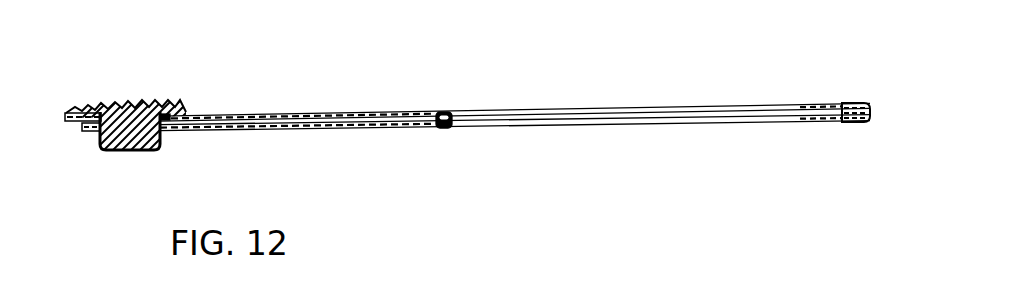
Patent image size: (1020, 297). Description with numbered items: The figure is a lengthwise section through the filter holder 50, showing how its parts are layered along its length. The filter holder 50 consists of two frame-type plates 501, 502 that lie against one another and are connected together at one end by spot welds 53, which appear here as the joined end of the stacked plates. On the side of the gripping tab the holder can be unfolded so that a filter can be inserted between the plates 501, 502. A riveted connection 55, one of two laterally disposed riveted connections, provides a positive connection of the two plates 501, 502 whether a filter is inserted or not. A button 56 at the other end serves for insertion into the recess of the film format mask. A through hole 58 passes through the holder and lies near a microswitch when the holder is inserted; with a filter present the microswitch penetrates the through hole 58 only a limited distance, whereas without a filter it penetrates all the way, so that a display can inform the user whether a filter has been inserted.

The rod 50 is at (518, 123).
The upper rail of rod 501 is at (570, 110).
The lower rail of rod 502 is at (563, 127).
The end cap 53 is at (855, 104).
The connecting block 55 is at (448, 129).
The serrated head block 56 is at (145, 141).
The threaded section 58 is at (303, 129).